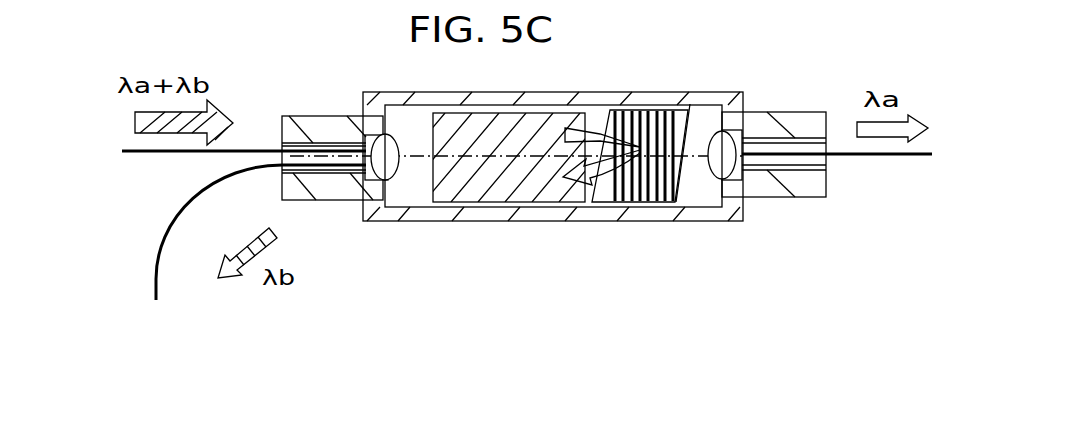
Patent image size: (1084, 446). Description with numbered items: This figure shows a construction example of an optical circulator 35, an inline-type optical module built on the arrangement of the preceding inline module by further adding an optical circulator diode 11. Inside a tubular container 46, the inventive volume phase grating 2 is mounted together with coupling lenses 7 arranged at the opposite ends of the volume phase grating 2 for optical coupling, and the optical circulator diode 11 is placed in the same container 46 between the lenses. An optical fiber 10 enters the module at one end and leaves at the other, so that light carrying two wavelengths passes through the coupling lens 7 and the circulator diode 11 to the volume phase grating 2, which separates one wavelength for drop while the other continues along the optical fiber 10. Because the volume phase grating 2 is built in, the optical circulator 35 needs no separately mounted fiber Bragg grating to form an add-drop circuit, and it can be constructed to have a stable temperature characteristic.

The optical fiber 10 is at (892, 157).
The optical circulator diode 11 is at (498, 128).
The volume phase grating 2 is at (640, 112).
The coupling lens 7 is at (698, 106).
The optical circulator 35 is at (804, 111).
The tubular container 46 is at (540, 215).